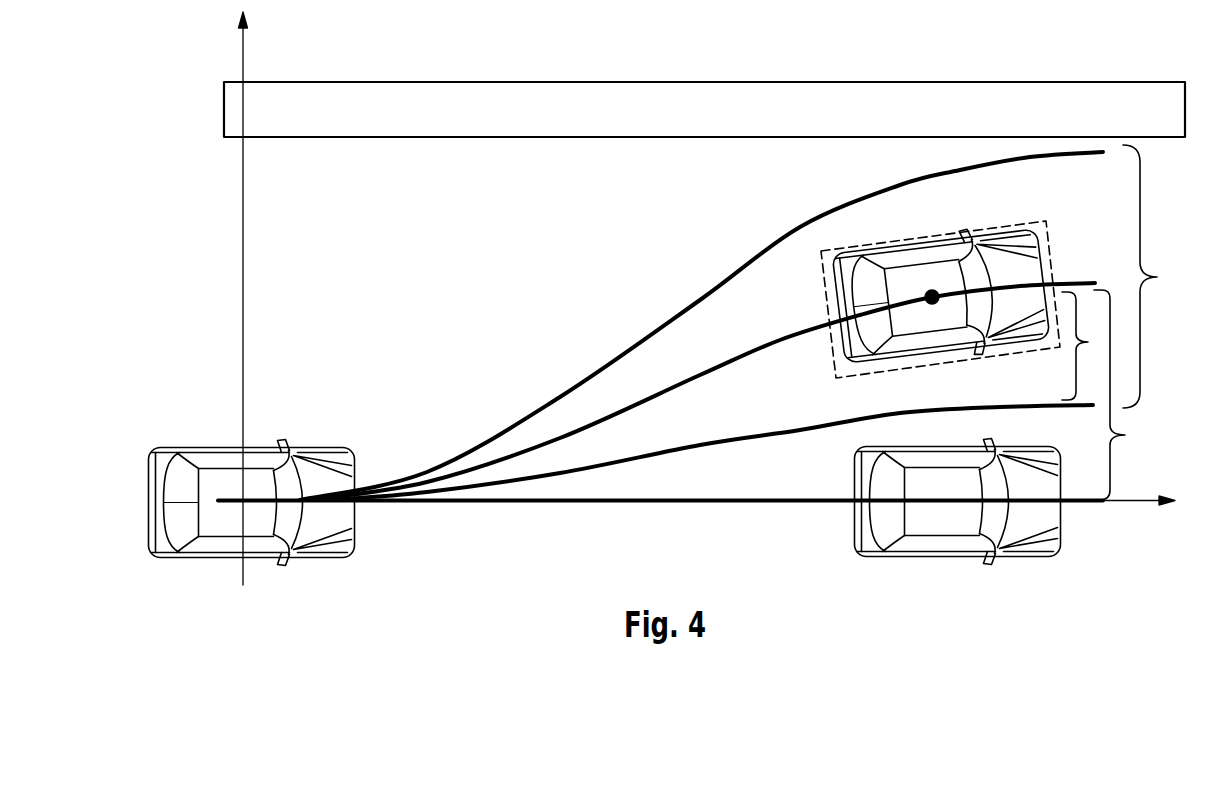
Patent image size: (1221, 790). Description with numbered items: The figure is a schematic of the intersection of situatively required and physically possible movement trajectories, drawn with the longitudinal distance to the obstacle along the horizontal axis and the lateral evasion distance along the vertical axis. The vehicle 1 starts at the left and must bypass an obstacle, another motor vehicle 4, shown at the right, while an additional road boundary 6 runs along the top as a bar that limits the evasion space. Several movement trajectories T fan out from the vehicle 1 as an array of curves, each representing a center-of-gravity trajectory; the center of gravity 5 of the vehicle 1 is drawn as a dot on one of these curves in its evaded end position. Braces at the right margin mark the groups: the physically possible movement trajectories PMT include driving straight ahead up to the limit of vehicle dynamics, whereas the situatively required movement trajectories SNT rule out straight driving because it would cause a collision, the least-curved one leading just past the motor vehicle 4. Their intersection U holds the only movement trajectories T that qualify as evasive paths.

The vehicle 1 is at (218, 480).
The other vehicle 4 is at (898, 482).
The center of gravity 5 is at (933, 290).
The road boundary 6 is at (473, 137).
The movement trajectory T is at (602, 500).
The situatively required movement trajectories SNT is at (1165, 276).
The intersection U is at (1085, 346).
The physically possible movement trajectories PMT is at (1139, 395).